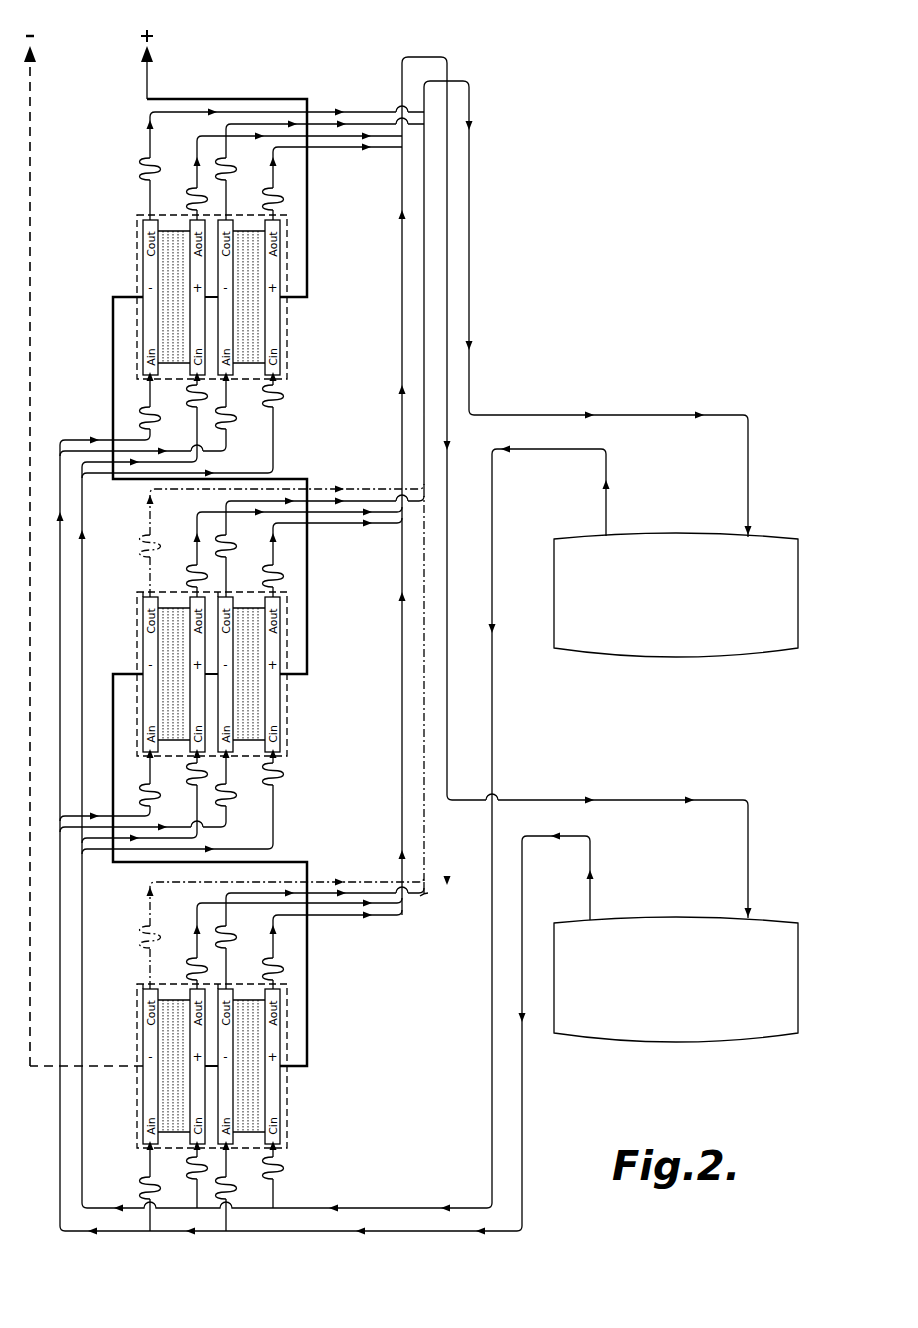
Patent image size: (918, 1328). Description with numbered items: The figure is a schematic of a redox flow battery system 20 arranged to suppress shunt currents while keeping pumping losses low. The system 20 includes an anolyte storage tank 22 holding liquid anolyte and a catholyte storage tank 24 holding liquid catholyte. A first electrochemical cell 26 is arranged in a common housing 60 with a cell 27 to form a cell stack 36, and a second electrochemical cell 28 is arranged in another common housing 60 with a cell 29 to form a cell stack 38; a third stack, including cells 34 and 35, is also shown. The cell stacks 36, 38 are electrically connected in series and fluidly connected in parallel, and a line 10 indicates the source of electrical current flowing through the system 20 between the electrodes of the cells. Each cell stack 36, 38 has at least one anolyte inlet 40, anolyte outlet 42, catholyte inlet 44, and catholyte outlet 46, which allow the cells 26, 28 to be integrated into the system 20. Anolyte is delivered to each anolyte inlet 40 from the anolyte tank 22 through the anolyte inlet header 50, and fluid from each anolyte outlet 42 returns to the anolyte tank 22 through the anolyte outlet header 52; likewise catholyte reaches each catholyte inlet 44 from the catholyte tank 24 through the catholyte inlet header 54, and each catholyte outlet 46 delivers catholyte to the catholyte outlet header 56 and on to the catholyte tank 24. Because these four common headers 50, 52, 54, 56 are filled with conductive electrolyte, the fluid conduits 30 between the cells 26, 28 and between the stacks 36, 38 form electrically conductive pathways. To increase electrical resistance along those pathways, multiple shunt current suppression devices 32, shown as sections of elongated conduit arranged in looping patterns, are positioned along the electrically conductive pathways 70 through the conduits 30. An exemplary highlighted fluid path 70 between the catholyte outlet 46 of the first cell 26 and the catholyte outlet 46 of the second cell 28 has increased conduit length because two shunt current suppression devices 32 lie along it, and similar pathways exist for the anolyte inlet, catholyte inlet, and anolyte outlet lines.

The line indicating electrical current 10 is at (232, 298).
The redox flow battery system 20 is at (549, 217).
The anolyte storage tank 22 is at (768, 918).
The catholyte storage tank 24 is at (762, 532).
The first electrochemical cell 26 is at (140, 1097).
The cell 27 is at (288, 1103).
The second electrochemical cell 28 is at (140, 668).
The cell 29 is at (288, 708).
The fluid conduit 30 is at (434, 899).
The shunt current suppression device 32 is at (148, 545).
The cell 34 is at (140, 270).
The cell 35 is at (288, 268).
The cell stack 36 is at (291, 1132).
The cell stack 38 is at (291, 764).
The anolyte inlet 40 is at (149, 762).
The anolyte outlet 42 is at (195, 592).
The catholyte inlet 44 is at (196, 766).
The catholyte outlet 46 is at (148, 598).
The anolyte inlet header 50 is at (50, 938).
The anolyte outlet header 52 is at (399, 786).
The catholyte inlet header 54 is at (83, 915).
The catholyte outlet header 56 is at (427, 855).
The common housing 60 is at (288, 222).
The electrically conductive pathway 70 is at (423, 668).